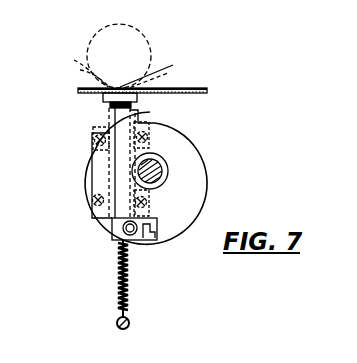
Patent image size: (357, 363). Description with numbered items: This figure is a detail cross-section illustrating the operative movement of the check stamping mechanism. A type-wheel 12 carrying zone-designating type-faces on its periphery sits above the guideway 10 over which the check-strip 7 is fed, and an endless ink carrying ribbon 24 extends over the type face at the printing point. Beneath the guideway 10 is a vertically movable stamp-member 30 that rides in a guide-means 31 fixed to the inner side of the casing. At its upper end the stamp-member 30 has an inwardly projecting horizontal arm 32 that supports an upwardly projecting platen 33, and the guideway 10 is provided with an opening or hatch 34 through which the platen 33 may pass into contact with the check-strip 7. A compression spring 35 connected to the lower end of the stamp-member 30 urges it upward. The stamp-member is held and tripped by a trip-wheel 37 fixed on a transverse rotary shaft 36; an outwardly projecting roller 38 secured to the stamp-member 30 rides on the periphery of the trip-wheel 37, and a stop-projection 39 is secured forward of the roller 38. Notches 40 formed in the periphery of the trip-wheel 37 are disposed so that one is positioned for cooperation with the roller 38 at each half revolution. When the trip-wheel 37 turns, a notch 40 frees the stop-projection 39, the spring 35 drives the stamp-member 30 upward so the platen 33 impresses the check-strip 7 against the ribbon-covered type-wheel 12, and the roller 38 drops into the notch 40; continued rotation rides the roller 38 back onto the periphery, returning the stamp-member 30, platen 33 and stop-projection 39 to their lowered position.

The check-strip 7 is at (203, 88).
The guideway 10 is at (103, 96).
The type-wheel 12 is at (147, 49).
The ink carrying ribbon 24 is at (81, 66).
The stamp-member 30 is at (117, 113).
The guide-means 31 is at (92, 140).
The horizontal arm 32 is at (137, 108).
The platen 33 is at (158, 73).
The opening or hatch 34 is at (103, 107).
The compression spring 35 is at (118, 281).
The transverse rotary shaft 36 is at (168, 171).
The trip-wheel 37 is at (187, 143).
The roller 38 is at (112, 235).
The stop-projection 39 is at (141, 240).
The notches 40 is at (180, 122).